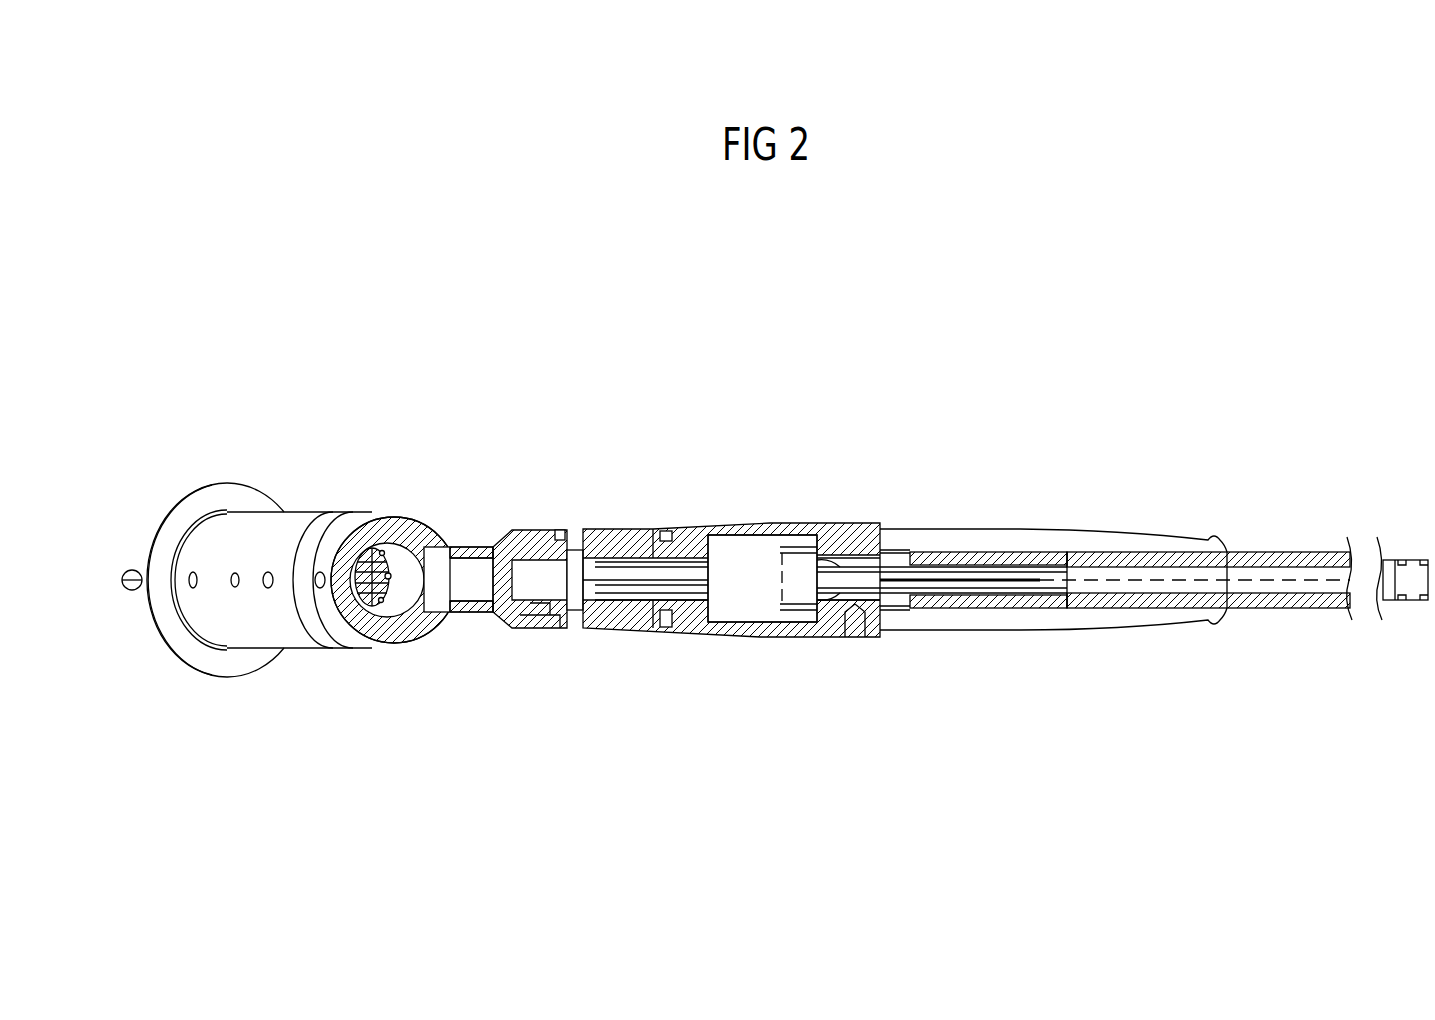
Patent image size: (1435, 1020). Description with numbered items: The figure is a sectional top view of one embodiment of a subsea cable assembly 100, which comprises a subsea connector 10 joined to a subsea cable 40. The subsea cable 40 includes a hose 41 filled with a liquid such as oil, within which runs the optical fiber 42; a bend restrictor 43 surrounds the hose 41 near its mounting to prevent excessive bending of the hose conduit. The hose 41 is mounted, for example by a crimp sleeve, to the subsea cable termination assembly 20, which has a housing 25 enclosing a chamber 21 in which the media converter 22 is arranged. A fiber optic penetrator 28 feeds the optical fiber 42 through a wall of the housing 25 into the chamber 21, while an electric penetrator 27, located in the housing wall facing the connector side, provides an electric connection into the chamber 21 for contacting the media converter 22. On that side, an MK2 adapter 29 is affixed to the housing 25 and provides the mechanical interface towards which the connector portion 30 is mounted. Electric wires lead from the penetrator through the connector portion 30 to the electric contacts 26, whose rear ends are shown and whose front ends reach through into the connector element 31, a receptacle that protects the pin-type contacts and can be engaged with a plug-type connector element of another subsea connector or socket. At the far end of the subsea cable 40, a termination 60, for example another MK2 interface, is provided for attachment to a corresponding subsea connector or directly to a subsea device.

The subsea cable assembly 100 is at (1153, 288).
The subsea connector 10 is at (523, 388).
The subsea cable termination assembly 20 is at (880, 703).
The connector portion 30 is at (660, 703).
The connector element 31 is at (245, 523).
The electric contacts 26 is at (381, 551).
The MK2 adapter 29 is at (652, 535).
The electric penetrator 27 is at (690, 528).
The housing 25 is at (762, 638).
The media converter 22 is at (748, 562).
The chamber 21 is at (790, 543).
The fiber optic penetrator 28 is at (836, 527).
The subsea cable 40 is at (1221, 475).
The bend restrictor 43 is at (963, 634).
The optical fiber 42 is at (1028, 563).
The hose 41 is at (1285, 558).
The termination 60 is at (1400, 560).